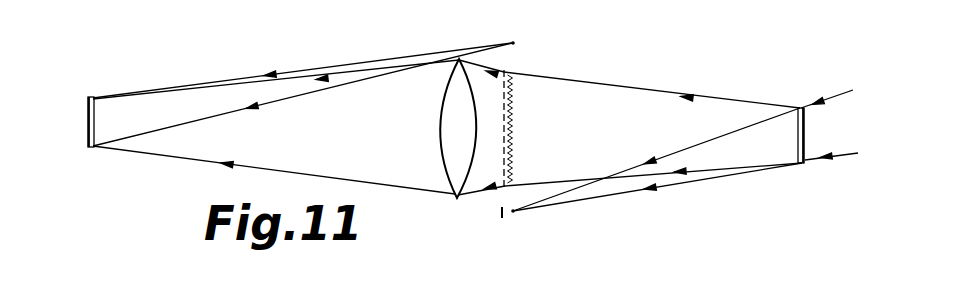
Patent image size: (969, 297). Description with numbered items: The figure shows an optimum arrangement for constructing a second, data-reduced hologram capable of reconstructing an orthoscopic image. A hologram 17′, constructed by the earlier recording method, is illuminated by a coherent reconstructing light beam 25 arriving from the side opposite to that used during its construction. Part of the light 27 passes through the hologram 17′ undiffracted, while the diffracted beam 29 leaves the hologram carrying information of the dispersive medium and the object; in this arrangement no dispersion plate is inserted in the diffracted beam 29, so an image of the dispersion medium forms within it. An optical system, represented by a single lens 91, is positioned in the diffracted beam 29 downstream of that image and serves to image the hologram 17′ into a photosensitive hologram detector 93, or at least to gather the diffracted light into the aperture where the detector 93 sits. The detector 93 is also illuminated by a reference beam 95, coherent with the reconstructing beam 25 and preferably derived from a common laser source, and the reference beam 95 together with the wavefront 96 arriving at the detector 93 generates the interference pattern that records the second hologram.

The photosensitive hologram detector 93 is at (92, 96).
The reference beam 95 is at (365, 62).
The wavefront 96 is at (180, 152).
The lens 91 is at (452, 196).
The diffracted beam 29 is at (608, 90).
The hologram 17′ is at (800, 107).
The reconstructing light beam 25 is at (847, 151).
The undiffracted light 27 is at (618, 189).